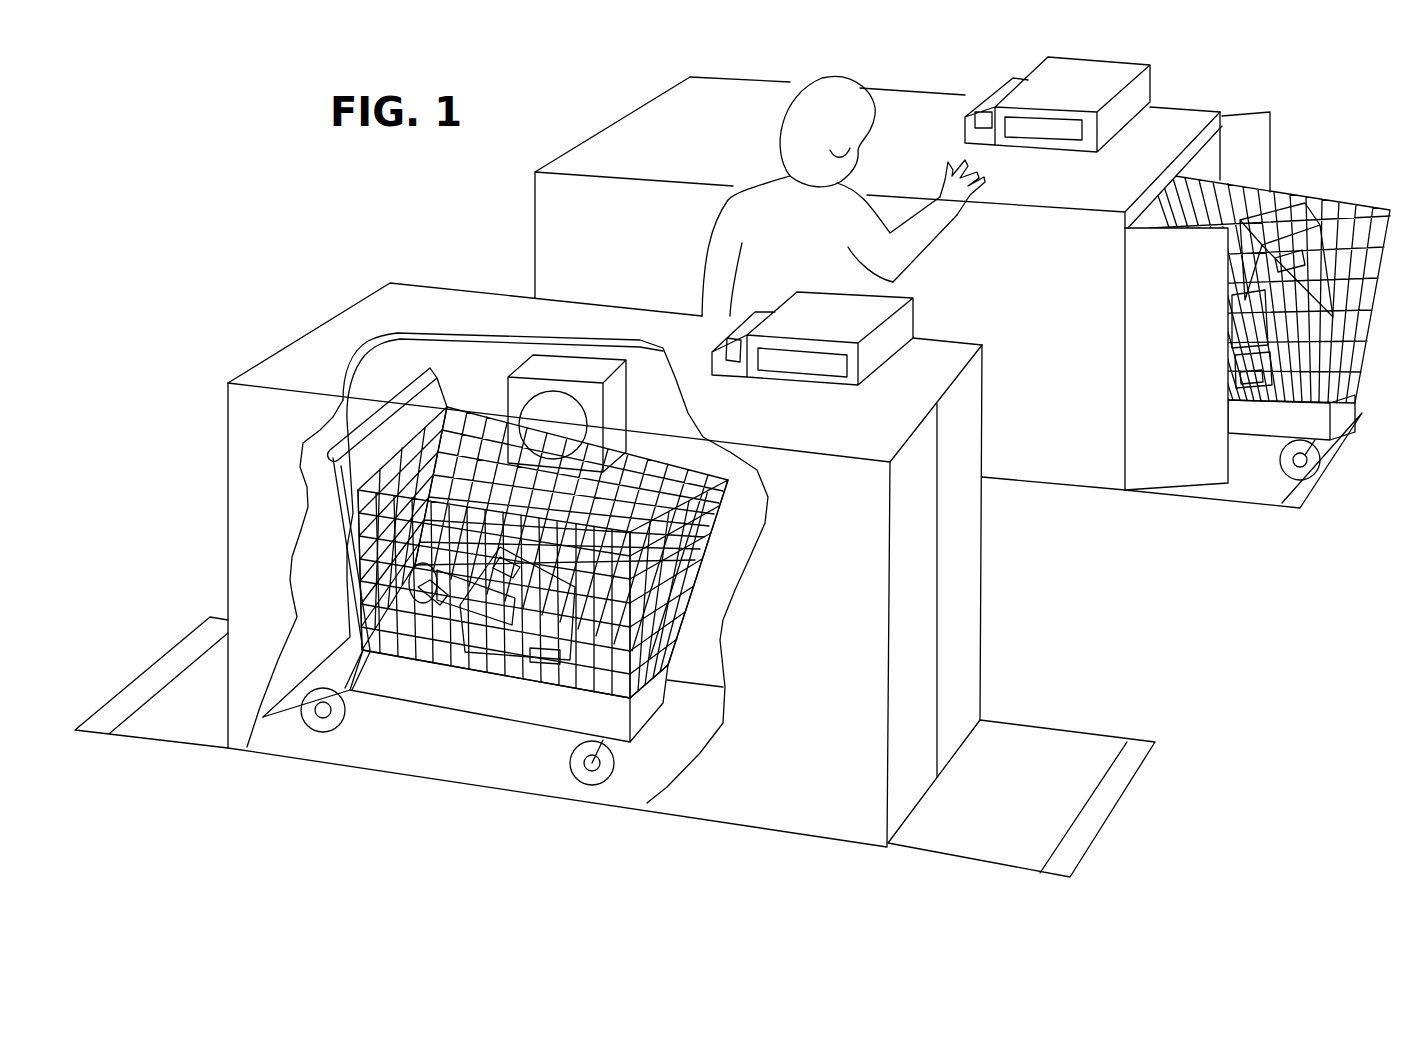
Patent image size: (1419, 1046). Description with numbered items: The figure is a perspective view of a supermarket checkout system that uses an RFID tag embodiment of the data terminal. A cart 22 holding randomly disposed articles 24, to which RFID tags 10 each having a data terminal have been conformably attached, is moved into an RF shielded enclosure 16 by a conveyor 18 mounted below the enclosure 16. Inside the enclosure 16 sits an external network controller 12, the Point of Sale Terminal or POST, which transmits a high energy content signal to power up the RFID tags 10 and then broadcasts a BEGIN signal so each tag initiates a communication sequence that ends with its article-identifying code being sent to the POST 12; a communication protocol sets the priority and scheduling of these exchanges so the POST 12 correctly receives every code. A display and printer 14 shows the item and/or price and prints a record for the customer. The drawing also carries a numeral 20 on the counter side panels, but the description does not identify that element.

The RFID tags 10 is at (450, 642).
The external network controller 12 is at (505, 398).
The display and printer 14 is at (860, 365).
The RF shielded enclosure 16 is at (767, 802).
The conveyor 18 is at (1032, 742).
The panel 20 is at (960, 595).
The cart 22 is at (357, 630).
The articles 24 is at (553, 617).